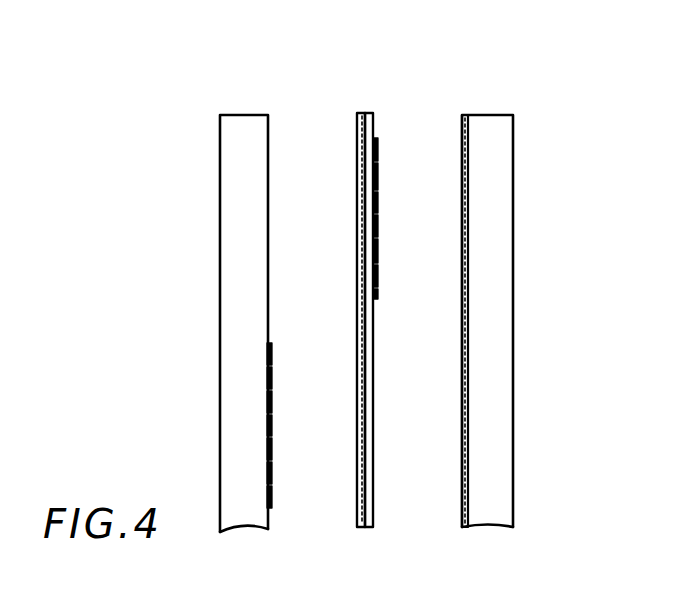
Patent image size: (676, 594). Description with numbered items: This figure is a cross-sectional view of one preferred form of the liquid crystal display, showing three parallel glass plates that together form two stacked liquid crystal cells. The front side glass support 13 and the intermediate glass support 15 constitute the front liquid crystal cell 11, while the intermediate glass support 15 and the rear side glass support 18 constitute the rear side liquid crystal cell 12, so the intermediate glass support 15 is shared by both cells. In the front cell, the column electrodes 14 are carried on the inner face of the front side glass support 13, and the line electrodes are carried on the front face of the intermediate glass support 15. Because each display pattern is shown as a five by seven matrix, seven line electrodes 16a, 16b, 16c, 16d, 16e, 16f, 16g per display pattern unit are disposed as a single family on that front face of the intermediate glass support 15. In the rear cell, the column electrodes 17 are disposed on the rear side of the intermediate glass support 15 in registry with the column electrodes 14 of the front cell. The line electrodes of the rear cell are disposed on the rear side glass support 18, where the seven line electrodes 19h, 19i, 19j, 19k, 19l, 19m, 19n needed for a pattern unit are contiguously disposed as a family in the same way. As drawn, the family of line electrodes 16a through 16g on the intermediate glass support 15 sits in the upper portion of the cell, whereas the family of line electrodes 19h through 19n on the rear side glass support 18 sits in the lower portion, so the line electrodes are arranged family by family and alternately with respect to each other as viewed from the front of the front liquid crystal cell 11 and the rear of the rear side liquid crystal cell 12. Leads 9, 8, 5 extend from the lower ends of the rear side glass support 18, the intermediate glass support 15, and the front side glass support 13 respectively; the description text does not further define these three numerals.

The rear side liquid crystal cell 12 is at (355, 68).
The front liquid crystal cell 11 is at (528, 68).
The rear side glass support 18 is at (237, 128).
The column electrodes 17 is at (357, 134).
The intermediate glass support 15 is at (365, 128).
The column electrodes 14 is at (463, 124).
The front side glass support 13 is at (490, 137).
The line electrode 16a is at (375, 139).
The line electrode 16b is at (378, 162).
The line electrode 16c is at (378, 190).
The line electrode 16d is at (378, 215).
The line electrode 16e is at (378, 240).
The line electrode 16f is at (378, 265).
The line electrode 16g is at (378, 290).
The line electrode 19h is at (272, 354).
The line electrode 19i is at (272, 380).
The line electrode 19j is at (272, 405).
The line electrode 19k is at (272, 430).
The line electrode 19l is at (272, 452).
The line electrode 19m is at (272, 478).
The line electrode 19n is at (272, 500).
The lead 9 is at (268, 516).
The lead 8 is at (355, 512).
The lead 5 is at (458, 520).